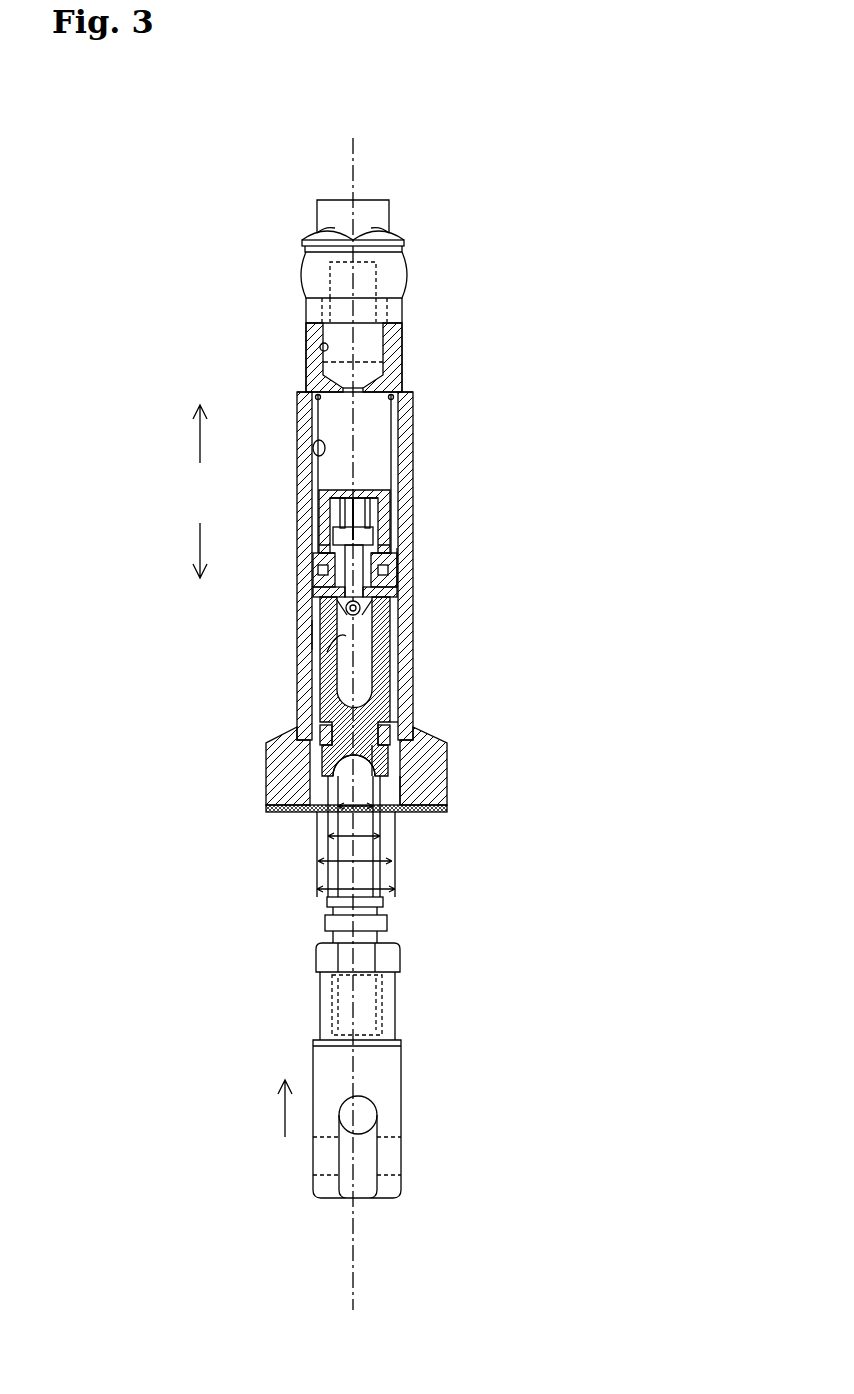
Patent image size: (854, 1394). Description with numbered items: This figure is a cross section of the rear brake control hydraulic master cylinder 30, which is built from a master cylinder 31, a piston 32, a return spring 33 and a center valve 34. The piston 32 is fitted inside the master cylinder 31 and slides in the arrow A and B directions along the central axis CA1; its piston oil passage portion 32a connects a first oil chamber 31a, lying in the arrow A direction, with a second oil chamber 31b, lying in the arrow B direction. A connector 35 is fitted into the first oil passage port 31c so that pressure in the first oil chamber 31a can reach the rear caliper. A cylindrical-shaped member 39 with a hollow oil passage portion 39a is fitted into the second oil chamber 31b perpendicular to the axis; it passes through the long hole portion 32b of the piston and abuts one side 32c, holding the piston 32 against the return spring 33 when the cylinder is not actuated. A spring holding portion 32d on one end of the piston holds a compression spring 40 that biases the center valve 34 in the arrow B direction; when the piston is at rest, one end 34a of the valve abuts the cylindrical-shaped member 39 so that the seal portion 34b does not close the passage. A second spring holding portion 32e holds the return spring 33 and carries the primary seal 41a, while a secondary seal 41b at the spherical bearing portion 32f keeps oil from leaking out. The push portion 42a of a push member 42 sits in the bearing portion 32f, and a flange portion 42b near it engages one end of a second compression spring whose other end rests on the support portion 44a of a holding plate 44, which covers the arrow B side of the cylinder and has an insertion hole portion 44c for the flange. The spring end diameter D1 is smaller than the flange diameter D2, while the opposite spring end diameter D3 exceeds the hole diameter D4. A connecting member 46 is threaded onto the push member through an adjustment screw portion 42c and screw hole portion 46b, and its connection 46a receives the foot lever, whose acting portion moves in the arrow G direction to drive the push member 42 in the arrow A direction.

The rear brake control hydraulic master cylinder 30 is at (290, 230).
The master cylinder 31 is at (305, 412).
The first oil chamber 31a is at (318, 450).
The second oil chamber 31b is at (318, 632).
The first oil passage port 31c is at (320, 348).
The piston 32 is at (316, 592).
The piston oil passage portion 32a is at (318, 562).
The long hole portion 32b is at (327, 646).
The one side of long hole portion 32c is at (394, 654).
The spring holding portion 32d is at (380, 491).
The second spring holding portion 32e is at (388, 524).
The bearing portion 32f is at (402, 742).
The return spring 33 is at (300, 391).
The center valve 34 is at (345, 491).
The one end of center valve 34a is at (361, 608).
The seal portion 34b is at (313, 546).
The connector 35 is at (312, 272).
The cylindrical-shaped member 39 is at (345, 606).
The oil passage portion 39a is at (350, 614).
The compression spring 40 is at (354, 498).
The primary seal 41a is at (398, 552).
The secondary seal 41b is at (386, 742).
The push member 42 is at (335, 897).
The push portion 42a is at (336, 768).
The flange portion 42b is at (320, 738).
The adjustment screw portion 42c is at (392, 1000).
The holding plate 44 is at (447, 808).
The support portion 44a is at (333, 782).
The insertion hole portion 44c is at (328, 818).
The connecting member 46 is at (390, 1078).
The connection 46a is at (327, 1170).
The screw hole portion 46b is at (332, 1013).
The central axis CA1 is at (352, 192).
The diameter of one end of compression spring D1 is at (355, 795).
The diameter of outer periphery of flange portion D2 is at (354, 825).
The diameter of other end of compression spring D3 is at (356, 880).
The hole diameter of insertion hole portion D4 is at (355, 851).
The arrow A direction A is at (192, 434).
The arrow B direction B is at (192, 550).
The arrow G direction G is at (291, 1108).